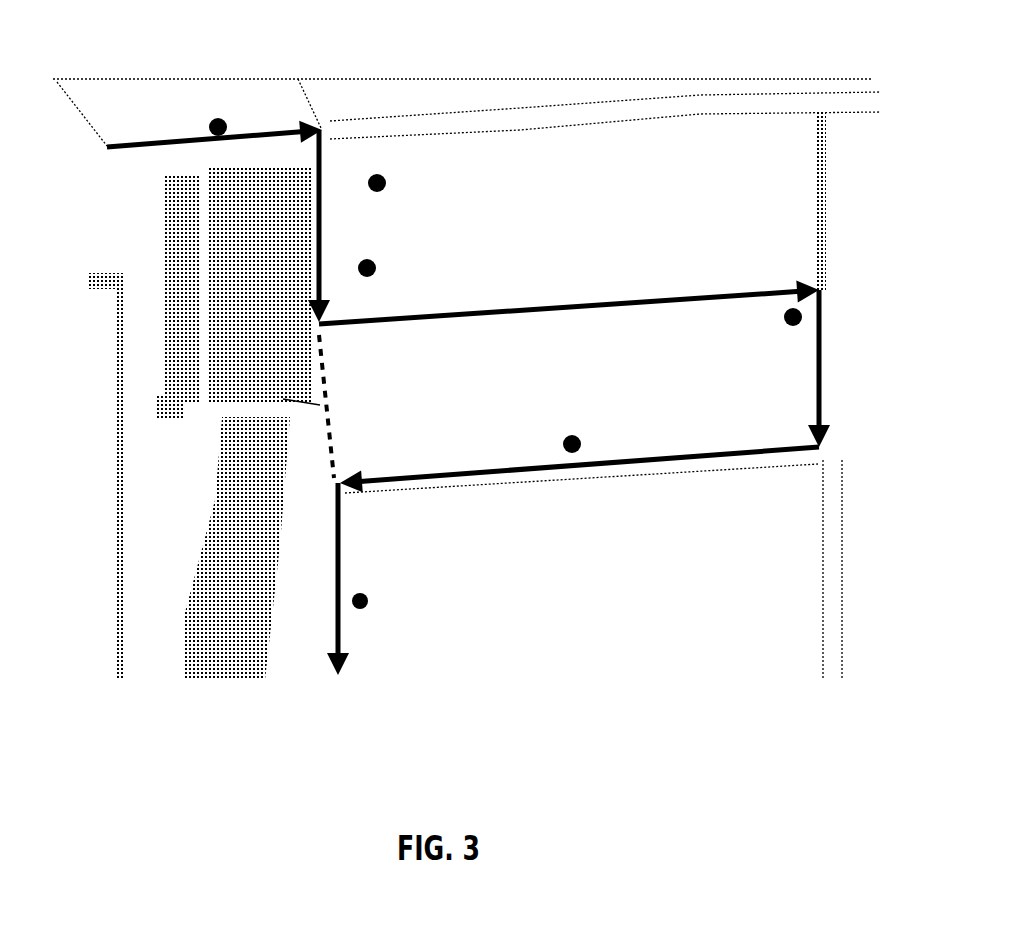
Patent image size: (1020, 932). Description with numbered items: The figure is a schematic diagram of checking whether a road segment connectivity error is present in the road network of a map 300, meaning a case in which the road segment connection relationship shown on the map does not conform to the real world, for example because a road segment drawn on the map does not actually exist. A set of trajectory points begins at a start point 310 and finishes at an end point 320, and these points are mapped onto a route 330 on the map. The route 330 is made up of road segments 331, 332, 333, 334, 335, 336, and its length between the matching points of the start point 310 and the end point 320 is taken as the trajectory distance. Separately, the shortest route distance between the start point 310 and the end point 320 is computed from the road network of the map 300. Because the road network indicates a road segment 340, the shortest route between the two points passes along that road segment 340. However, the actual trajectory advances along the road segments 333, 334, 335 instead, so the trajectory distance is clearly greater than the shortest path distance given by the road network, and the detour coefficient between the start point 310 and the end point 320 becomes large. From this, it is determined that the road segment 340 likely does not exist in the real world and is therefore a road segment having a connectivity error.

The map 300 is at (462, 52).
The start point 310 is at (217, 117).
The end point 320 is at (369, 603).
The route 330 is at (530, 292).
The road segment 331 is at (131, 152).
The road segment 332 is at (323, 233).
The road segment 333 is at (634, 297).
The road segment 334 is at (824, 392).
The road segment 335 is at (688, 452).
The road segment 336 is at (342, 541).
The road segment 340 is at (328, 405).